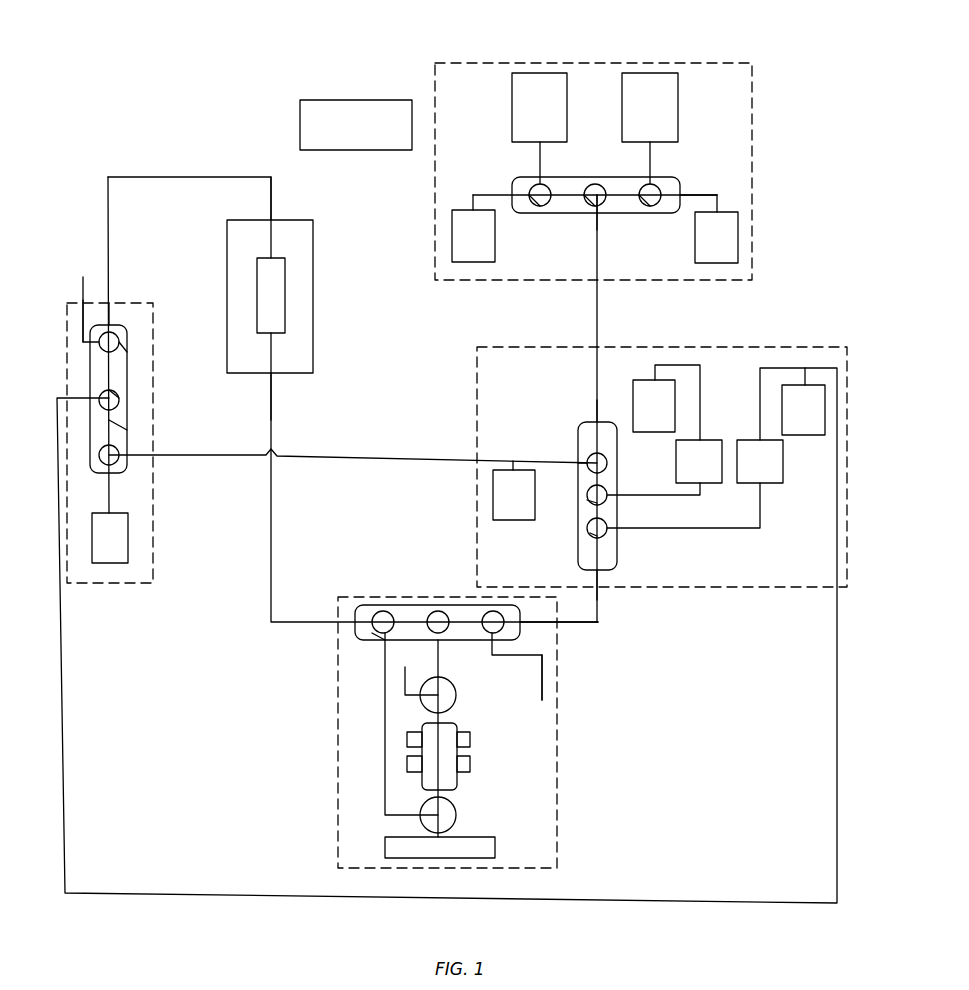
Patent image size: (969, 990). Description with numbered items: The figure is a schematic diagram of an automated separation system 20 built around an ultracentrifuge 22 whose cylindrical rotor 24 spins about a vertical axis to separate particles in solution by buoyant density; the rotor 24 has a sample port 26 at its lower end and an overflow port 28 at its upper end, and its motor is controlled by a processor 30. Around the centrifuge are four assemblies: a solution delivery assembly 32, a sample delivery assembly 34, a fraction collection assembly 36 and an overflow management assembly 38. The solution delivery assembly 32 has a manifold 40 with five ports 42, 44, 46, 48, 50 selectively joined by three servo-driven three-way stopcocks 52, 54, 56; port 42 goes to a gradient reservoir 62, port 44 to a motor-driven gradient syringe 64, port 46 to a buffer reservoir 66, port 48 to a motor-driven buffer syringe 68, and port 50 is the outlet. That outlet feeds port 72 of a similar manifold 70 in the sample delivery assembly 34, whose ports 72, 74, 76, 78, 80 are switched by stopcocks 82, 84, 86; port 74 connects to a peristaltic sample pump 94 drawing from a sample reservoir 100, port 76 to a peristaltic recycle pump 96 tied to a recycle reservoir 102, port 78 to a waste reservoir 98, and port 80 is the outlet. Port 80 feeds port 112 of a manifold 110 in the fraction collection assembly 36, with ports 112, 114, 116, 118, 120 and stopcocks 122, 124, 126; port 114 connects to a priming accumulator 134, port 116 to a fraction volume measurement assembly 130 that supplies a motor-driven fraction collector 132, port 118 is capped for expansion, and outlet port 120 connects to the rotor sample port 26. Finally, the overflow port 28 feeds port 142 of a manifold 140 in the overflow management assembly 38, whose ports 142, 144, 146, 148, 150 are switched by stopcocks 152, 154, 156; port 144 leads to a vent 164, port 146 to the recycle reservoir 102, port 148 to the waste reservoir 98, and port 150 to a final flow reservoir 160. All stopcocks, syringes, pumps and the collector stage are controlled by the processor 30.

The system 20 is at (236, 100).
The ultracentrifuge 22 is at (313, 253).
The cylindrical rotor 24 is at (285, 297).
The sample port 26 is at (273, 375).
The overflow port 28 is at (273, 220).
The processor 30 is at (367, 137).
The solution delivery assembly 32 is at (762, 133).
The sample delivery assembly 34 is at (792, 342).
The fraction collection assembly 36 is at (568, 763).
The overflow management assembly 38 is at (100, 595).
The manifold 40 is at (622, 177).
The port 42 is at (512, 195).
The port 44 is at (540, 184).
The port 46 is at (680, 193).
The port 48 is at (655, 185).
The outlet port 50 is at (600, 207).
The stopcock 52 is at (532, 205).
The stopcock 54 is at (590, 205).
The stopcock 56 is at (655, 207).
The gradient reservoir 62 is at (485, 257).
The gradient syringe 64 is at (552, 111).
The buffer reservoir 66 is at (729, 257).
The buffer syringe 68 is at (662, 111).
The manifold 70 is at (617, 555).
The port 72 is at (590, 422).
The port 74 is at (607, 495).
The port 76 is at (607, 528).
The port 78 is at (587, 463).
The outlet port 80 is at (600, 570).
The stopcock 82 is at (607, 463).
The stopcock 84 is at (590, 498).
The stopcock 86 is at (592, 533).
The sample pump 94 is at (712, 472).
The recycle pump 96 is at (772, 472).
The waste reservoir 98 is at (526, 504).
The sample reservoir 100 is at (672, 417).
The recycle reservoir 102 is at (821, 417).
The manifold 110 is at (365, 605).
The port 112 is at (520, 625).
The port 114 is at (492, 650).
The port 116 is at (383, 645).
The port 118 is at (438, 640).
The outlet port 120 is at (372, 624).
The stopcock 122 is at (493, 611).
The stopcock 124 is at (438, 611).
The stopcock 126 is at (380, 633).
The fraction volume measurement assembly 130 is at (475, 793).
The fraction collector 132 is at (518, 847).
The priming accumulator 134 is at (542, 680).
The manifold 140 is at (119, 340).
The port 142 is at (110, 325).
The port 144 is at (77, 293).
The port 146 is at (99, 397).
The port 148 is at (128, 460).
The port 150 is at (128, 470).
The stopcock 152 is at (128, 352).
The stopcock 154 is at (119, 398).
The stopcock 156 is at (128, 430).
The final flow reservoir 160 is at (128, 537).
The vent 164 is at (85, 343).